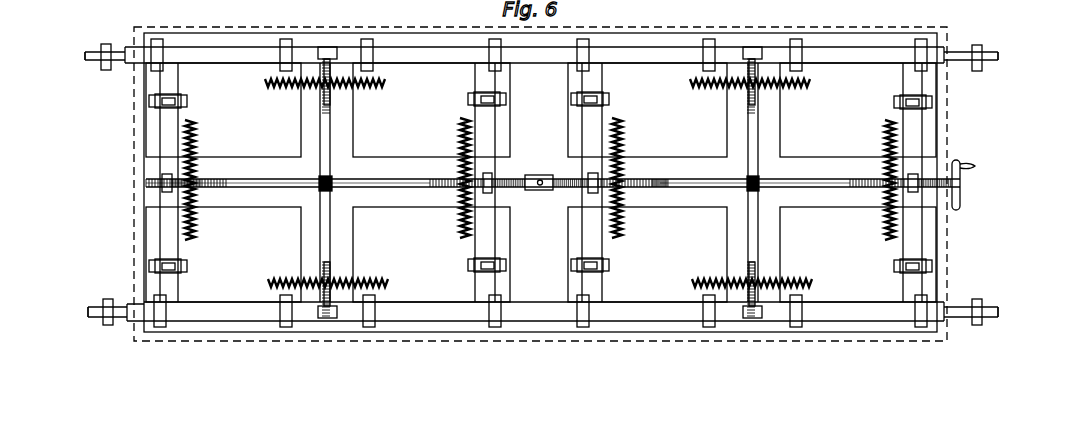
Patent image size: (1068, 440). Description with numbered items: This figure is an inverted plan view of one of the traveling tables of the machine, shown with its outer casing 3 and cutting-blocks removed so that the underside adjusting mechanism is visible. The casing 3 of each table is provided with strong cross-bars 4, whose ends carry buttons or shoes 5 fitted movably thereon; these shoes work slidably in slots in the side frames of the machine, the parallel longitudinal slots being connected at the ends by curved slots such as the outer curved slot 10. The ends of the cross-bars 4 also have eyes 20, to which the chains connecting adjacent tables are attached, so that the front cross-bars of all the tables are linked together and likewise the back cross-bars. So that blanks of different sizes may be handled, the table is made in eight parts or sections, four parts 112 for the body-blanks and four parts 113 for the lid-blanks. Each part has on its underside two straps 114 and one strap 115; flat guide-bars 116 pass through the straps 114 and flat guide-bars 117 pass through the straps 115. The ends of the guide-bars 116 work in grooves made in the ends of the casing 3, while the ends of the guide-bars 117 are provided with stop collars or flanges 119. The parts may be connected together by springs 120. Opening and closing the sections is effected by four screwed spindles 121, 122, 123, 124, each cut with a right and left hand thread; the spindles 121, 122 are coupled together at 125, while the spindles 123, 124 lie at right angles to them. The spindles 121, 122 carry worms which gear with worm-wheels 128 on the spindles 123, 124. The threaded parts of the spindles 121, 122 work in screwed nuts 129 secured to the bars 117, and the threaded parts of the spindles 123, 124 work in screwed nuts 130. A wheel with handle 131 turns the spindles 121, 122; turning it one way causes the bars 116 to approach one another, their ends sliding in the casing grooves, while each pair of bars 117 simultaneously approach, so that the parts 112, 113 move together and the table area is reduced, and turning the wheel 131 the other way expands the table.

The casing 3 is at (440, 40).
The cross-bar 4 is at (120, 63).
The button or shoe 5 is at (103, 70).
The outer curved slot 10 is at (540, 166).
The eye 20 is at (93, 72).
The body-blank table part 112 is at (752, 182).
The lid-blank table part 113 is at (328, 182).
The strap 114 is at (160, 47).
The strap 115 is at (178, 104).
The guide-bar 116 is at (540, 184).
The guide-bar 117 is at (905, 238).
The stop collar or flange 119 is at (172, 96).
The spring 120 is at (196, 152).
The screwed spindle 121 is at (360, 185).
The screwed spindle 122 is at (682, 185).
The screwed spindle 123 is at (760, 139).
The screwed spindle 124 is at (331, 152).
The coupling 125 is at (538, 191).
The worm-wheel 128 is at (318, 181).
The screwed nut 129 is at (146, 184).
The screwed nut 130 is at (336, 48).
The wheel with handle 131 is at (960, 208).